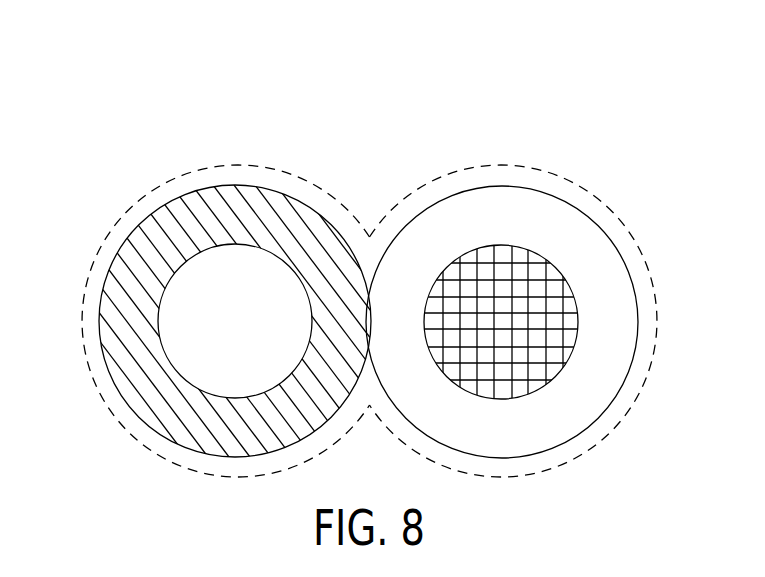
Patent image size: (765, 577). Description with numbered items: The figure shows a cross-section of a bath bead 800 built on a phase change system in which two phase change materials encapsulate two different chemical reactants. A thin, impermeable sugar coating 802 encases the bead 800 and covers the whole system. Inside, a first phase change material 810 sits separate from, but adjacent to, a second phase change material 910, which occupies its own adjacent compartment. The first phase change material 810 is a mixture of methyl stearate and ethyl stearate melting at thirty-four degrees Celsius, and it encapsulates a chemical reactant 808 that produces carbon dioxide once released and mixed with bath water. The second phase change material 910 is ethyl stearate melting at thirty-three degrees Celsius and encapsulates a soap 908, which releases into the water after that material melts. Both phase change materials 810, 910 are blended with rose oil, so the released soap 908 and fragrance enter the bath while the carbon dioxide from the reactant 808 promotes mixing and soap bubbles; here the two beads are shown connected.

The bath bead 800 is at (485, 89).
The sugar coating 802 is at (438, 182).
The chemical reactant 808 is at (502, 250).
The first phase change material 810 is at (633, 323).
The soap 908 is at (237, 253).
The second phase change material 910 is at (100, 322).